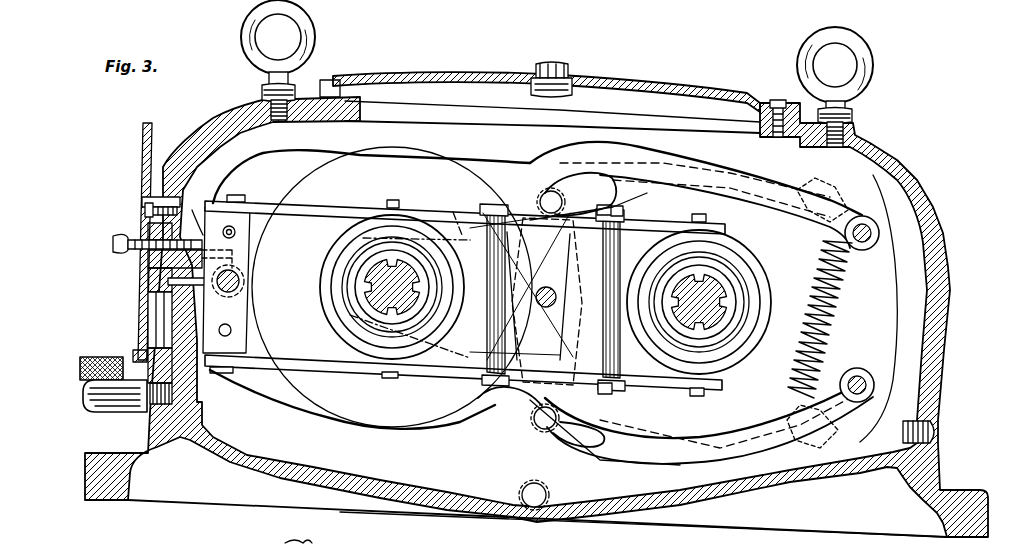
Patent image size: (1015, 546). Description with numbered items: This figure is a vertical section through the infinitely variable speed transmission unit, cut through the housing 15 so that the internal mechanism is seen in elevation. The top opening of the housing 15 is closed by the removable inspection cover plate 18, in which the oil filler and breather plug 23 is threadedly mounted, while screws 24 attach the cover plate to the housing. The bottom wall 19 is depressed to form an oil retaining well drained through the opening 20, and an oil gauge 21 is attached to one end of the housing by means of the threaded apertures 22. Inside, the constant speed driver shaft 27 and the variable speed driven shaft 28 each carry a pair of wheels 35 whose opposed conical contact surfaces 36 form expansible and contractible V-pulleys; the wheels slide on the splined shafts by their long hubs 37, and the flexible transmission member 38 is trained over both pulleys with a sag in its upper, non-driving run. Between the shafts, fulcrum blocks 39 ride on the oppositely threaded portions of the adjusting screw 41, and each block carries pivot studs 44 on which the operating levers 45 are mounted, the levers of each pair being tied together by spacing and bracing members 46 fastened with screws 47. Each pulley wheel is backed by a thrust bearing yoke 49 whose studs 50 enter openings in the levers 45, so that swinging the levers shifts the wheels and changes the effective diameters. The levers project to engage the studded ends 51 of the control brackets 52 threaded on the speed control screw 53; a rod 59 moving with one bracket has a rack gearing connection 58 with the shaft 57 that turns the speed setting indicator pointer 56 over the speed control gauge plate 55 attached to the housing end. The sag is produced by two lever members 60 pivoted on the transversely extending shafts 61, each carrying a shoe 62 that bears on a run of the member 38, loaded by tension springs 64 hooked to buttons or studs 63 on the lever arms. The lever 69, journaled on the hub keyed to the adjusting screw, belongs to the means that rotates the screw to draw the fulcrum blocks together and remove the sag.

The housing 15 is at (946, 386).
The removable inspection cover plate 18 is at (668, 80).
The bottom wall 19 is at (752, 514).
The opening 20 is at (546, 508).
The oil gauge 21 is at (88, 402).
The threaded apertures 22 is at (178, 403).
The oil filler and breather plug 23 is at (543, 65).
The screws 24 is at (779, 101).
The constant speed driver shaft 27 is at (717, 295).
The variable speed driven shaft 28 is at (375, 275).
The wheels 35 is at (305, 186).
The conical contact surfaces 36 is at (312, 273).
The hubs 37 is at (365, 312).
The flexible transmission member 38 is at (410, 273).
The fulcrum blocks 39 is at (560, 265).
The adjusting screw 41 is at (547, 308).
The pivot studs 44 is at (540, 210).
The operating levers 45 is at (364, 206).
The spacing and bracing members 46 is at (496, 299).
The screws 47 is at (623, 214).
The thrust bearing yoke 49 is at (319, 300).
The studs 50 is at (396, 199).
The studded ends 51 is at (238, 330).
The control brackets 52 is at (236, 195).
The speed control screw 53 is at (228, 292).
The speed control gauge plate 55 is at (144, 178).
The speed setting indicator pointer 56 is at (140, 294).
The shaft 57 is at (174, 214).
The rack gearing connection 58 is at (237, 250).
The rod 59 is at (234, 232).
The lever members 60 is at (770, 178).
The transversely extending shafts 61 is at (872, 233).
The shoe 62 is at (588, 206).
The buttons or studs 63 is at (818, 185).
The tension springs 64 is at (838, 334).
The lever 69 is at (308, 539).